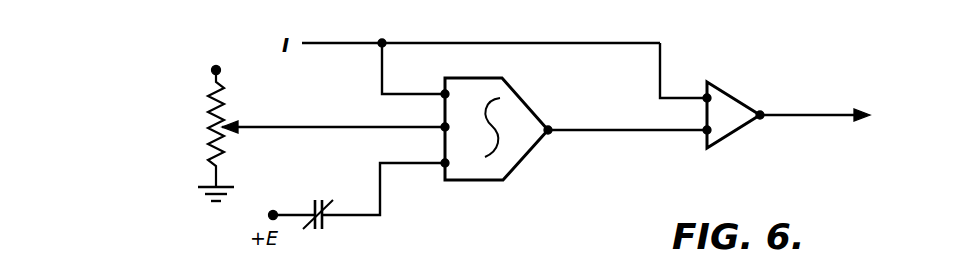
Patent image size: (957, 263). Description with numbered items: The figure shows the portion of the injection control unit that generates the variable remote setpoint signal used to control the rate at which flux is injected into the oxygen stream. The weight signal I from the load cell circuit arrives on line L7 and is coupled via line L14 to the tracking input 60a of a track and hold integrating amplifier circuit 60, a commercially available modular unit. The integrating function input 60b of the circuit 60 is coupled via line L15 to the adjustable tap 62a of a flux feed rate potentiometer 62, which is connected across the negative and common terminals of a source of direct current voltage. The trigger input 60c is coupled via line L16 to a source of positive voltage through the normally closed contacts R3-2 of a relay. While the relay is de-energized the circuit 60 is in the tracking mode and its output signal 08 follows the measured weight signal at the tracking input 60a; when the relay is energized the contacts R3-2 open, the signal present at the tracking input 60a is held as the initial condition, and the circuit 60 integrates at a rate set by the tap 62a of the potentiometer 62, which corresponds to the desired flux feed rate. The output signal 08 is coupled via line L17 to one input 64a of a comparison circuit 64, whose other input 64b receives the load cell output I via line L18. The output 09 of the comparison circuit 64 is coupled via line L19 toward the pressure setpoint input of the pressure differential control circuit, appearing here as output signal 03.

The track and hold integrating amplifier circuit 60 is at (488, 182).
The tracking input 60a is at (444, 93).
The integrating function input 60b is at (444, 126).
The trigger input 60c is at (441, 168).
The flux feed rate potentiometer 62 is at (207, 111).
The adjustable tap 62a is at (230, 125).
The comparison circuit 64 is at (736, 95).
The input of comparison circuit 64a is at (705, 133).
The input of comparison circuit 64b is at (705, 96).
The input line L7 is at (345, 41).
The line L14 is at (381, 70).
The line L15 is at (363, 129).
The line L16 is at (375, 217).
The line L17 is at (603, 133).
The line L18 is at (588, 43).
The line L19 is at (813, 118).
The output signal 08 is at (549, 128).
The output 09 is at (763, 113).
The output signal 03 is at (885, 117).
The normally closed contacts R3-2 is at (313, 198).